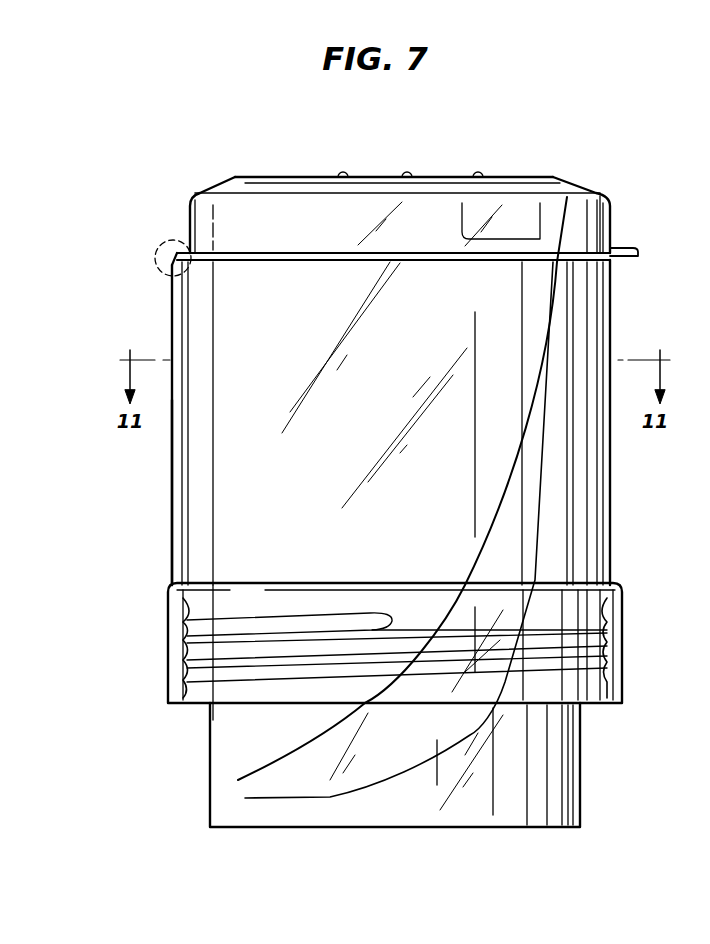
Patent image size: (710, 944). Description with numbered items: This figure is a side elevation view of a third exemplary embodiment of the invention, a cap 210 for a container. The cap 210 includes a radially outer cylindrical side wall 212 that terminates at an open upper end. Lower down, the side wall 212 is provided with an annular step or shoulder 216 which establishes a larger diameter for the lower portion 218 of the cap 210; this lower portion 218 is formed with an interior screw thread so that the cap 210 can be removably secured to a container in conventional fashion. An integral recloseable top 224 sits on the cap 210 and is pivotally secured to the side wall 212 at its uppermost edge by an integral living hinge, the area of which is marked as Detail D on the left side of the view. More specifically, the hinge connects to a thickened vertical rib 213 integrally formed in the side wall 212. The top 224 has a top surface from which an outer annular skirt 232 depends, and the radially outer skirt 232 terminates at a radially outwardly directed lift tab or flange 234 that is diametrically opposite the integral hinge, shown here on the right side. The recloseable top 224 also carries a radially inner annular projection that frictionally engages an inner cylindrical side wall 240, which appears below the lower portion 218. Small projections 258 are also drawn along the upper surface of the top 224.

The cap 210 is at (596, 148).
The radially outer cylindrical side wall 212 is at (596, 315).
The thickened vertical rib 213 is at (174, 489).
The annular step or shoulder 216 is at (616, 585).
The lower portion 218 is at (624, 649).
The integral recloseable top 224 is at (301, 178).
The outer annular skirt 232 is at (612, 202).
The lift tab or flange 234 is at (621, 248).
The inner cylindrical side wall 240 is at (212, 779).
The projections 258 is at (406, 176).
The Detail D is at (179, 240).